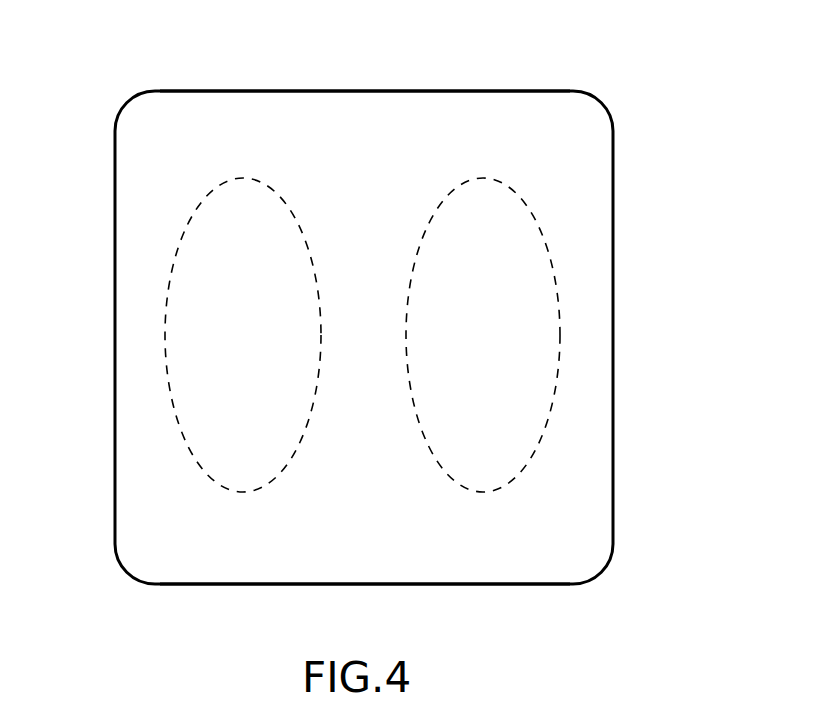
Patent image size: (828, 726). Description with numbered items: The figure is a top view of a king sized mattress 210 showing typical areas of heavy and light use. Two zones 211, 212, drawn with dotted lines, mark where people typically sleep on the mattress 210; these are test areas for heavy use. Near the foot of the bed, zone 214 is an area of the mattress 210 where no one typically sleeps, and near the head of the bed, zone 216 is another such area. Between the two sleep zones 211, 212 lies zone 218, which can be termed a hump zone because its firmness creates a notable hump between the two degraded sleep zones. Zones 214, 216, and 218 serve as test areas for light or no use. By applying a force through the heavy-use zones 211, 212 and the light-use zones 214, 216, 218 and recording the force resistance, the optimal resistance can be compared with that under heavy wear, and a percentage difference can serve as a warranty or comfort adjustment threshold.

The king sized mattress 210 is at (600, 165).
The zone 211 is at (186, 311).
The zone 212 is at (543, 312).
The zone 214 is at (358, 568).
The zone 216 is at (380, 112).
The zone 218 is at (359, 357).